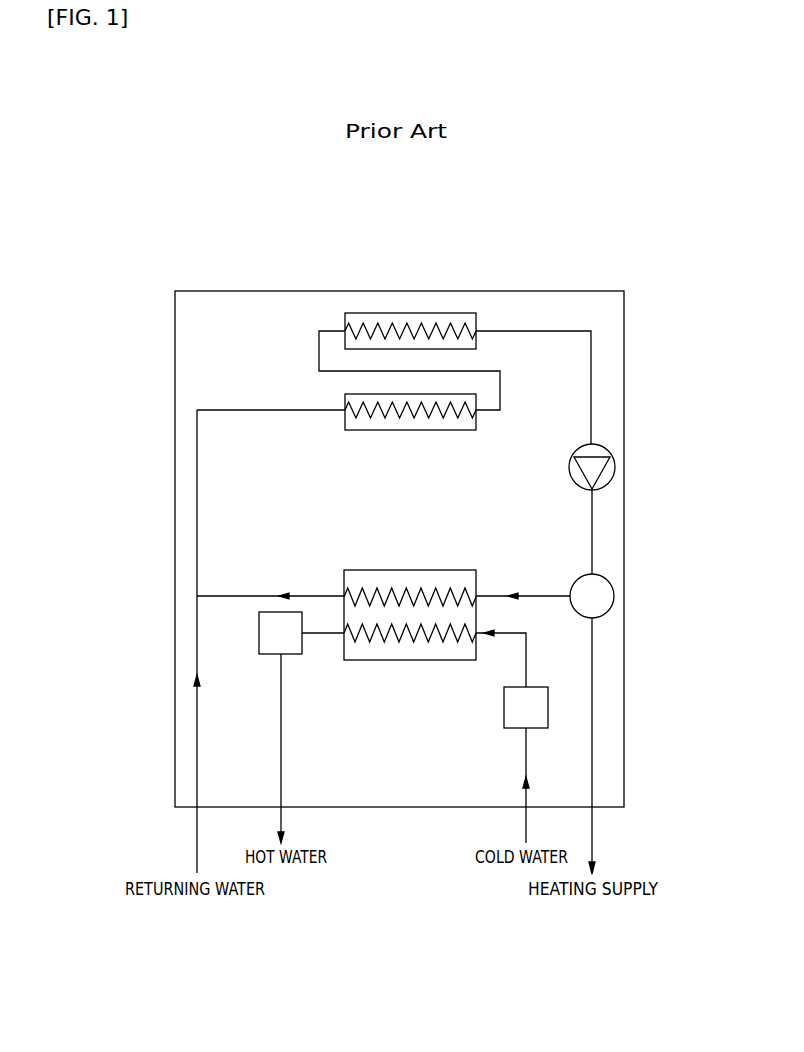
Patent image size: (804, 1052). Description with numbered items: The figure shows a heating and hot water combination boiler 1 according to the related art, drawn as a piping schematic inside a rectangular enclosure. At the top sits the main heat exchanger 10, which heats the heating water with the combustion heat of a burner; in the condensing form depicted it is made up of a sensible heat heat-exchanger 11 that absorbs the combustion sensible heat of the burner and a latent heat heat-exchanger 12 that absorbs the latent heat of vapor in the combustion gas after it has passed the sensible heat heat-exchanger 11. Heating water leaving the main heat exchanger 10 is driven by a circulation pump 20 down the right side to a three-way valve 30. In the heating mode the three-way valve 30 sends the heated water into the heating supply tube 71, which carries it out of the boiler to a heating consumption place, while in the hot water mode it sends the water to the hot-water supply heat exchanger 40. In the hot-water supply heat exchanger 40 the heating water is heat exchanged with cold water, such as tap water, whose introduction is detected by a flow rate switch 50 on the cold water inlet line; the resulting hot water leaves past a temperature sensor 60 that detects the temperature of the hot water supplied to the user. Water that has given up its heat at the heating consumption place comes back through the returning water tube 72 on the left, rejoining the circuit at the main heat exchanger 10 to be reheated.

The heating and hot water combination boiler 1 is at (229, 291).
The main heat exchanger 10 is at (441, 319).
The sensible heat heat-exchanger 11 is at (459, 313).
The latent heat heat-exchanger 12 is at (468, 394).
The circulation pump 20 is at (606, 446).
The three-way valve 30 is at (608, 582).
The hot-water supply heat exchanger 40 is at (407, 570).
The flow rate switch 50 is at (504, 705).
The temperature sensor 60 is at (302, 648).
The heating supply tube 71 is at (590, 758).
The returning water tube 72 is at (197, 731).